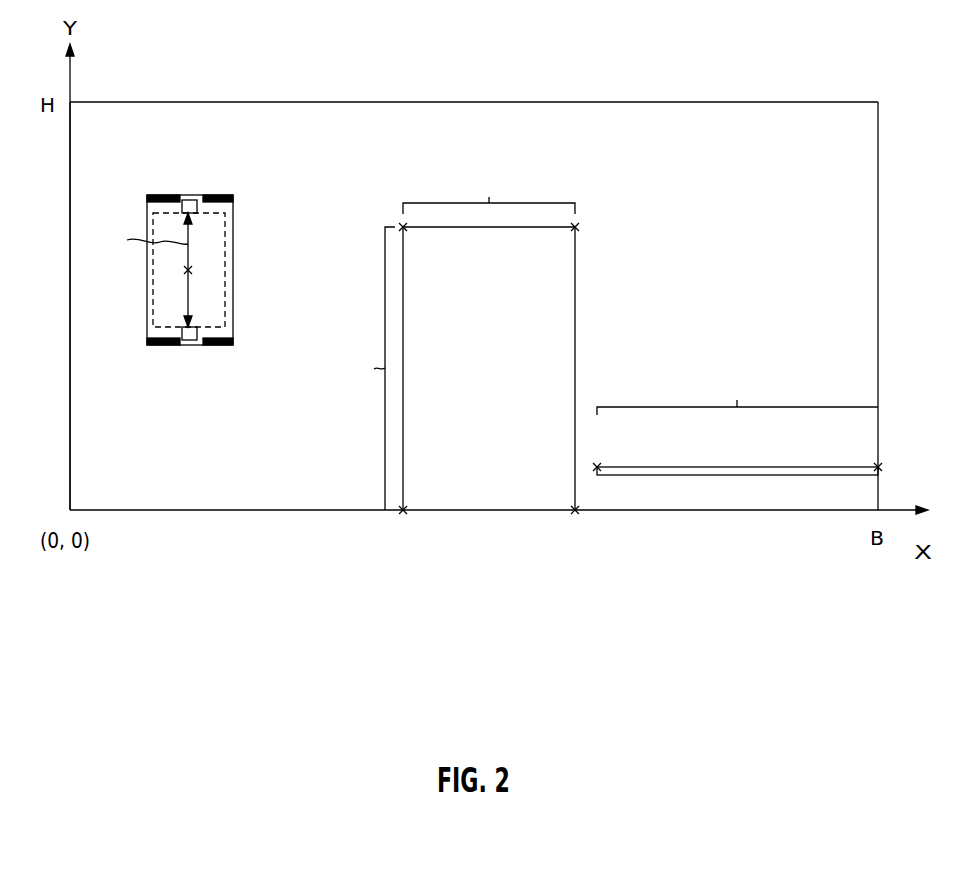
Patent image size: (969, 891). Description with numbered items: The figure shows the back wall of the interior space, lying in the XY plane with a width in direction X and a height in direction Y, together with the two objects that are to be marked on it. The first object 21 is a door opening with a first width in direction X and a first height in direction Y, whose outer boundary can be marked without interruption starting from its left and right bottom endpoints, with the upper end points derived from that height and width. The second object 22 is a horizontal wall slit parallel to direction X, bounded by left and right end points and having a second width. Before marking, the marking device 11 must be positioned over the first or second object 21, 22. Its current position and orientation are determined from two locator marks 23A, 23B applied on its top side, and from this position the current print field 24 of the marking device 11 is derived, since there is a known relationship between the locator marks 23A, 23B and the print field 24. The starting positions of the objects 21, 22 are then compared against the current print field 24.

The marking device 11 is at (262, 146).
The first object to be marked (door opening) 21 is at (487, 231).
The second object to be marked (wall slit) 22 is at (787, 477).
The first locator mark 23A is at (190, 200).
The second locator mark 23B is at (190, 345).
The current print field 24 is at (237, 259).